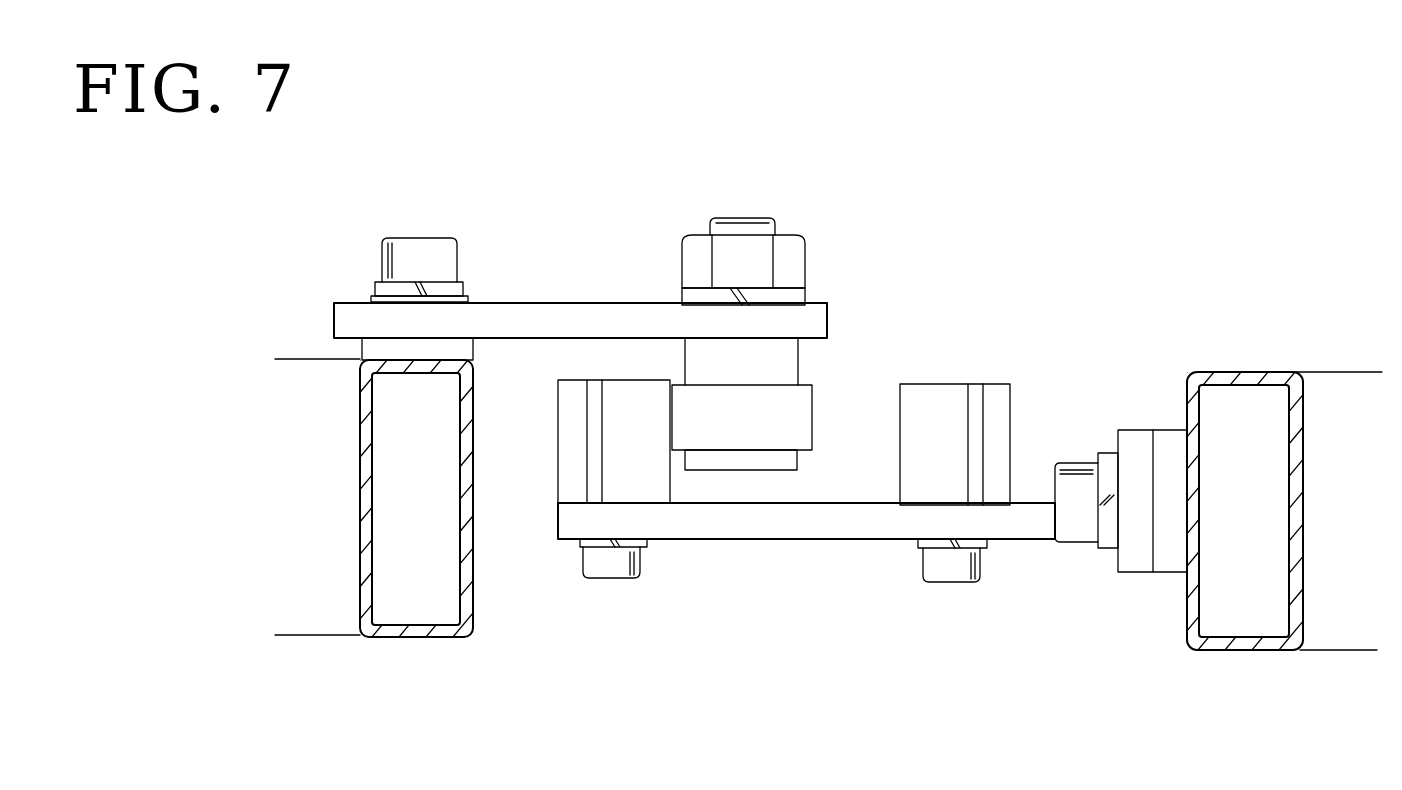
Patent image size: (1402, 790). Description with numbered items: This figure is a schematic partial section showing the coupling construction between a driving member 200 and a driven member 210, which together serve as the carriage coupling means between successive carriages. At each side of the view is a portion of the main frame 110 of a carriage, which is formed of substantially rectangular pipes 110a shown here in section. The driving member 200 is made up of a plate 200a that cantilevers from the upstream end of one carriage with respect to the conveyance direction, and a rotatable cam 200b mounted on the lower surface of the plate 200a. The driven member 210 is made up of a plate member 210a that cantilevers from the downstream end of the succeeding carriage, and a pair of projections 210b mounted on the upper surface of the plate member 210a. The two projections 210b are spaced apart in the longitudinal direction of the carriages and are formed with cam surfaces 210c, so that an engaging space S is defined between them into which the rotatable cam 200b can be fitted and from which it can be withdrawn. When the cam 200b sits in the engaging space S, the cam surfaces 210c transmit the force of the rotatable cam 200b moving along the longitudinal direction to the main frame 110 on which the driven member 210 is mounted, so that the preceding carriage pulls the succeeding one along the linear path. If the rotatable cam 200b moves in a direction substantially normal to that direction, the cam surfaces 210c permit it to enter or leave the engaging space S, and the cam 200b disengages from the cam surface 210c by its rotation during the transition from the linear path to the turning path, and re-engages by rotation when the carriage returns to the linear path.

The main frame 110 is at (752, 534).
The rectangular pipe 110a is at (423, 638).
The driving member 200 is at (637, 344).
The plate 200a is at (582, 315).
The rotatable cam 200b is at (805, 430).
The driven member 210 is at (842, 483).
The plate member 210a is at (992, 530).
The projection 210b is at (563, 478).
The cam surface 210c is at (662, 470).
The engaging space S is at (865, 488).